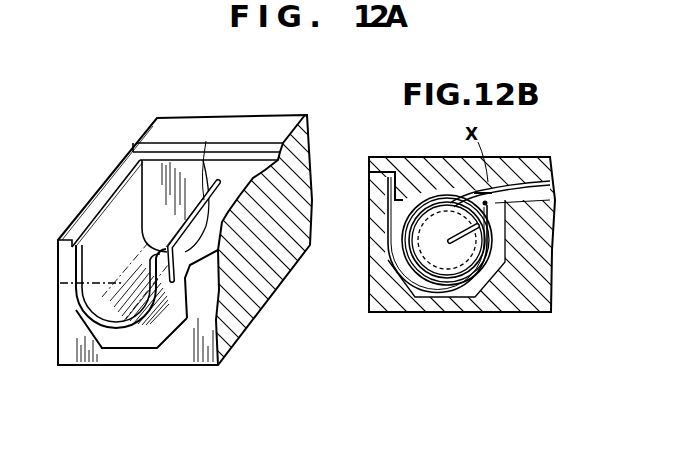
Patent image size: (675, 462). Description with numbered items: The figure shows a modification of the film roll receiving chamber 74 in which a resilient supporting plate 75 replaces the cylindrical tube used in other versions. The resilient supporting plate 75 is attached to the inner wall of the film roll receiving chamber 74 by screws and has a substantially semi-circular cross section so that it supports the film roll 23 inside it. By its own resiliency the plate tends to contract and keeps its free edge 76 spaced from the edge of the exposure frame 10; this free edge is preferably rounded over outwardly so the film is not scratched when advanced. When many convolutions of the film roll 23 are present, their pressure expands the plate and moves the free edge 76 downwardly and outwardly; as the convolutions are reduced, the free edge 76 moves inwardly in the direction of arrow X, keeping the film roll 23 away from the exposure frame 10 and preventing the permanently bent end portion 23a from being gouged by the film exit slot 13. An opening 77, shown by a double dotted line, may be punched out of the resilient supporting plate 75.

In FIG. 12A, the exposure frame 10 is at (277, 260).
In FIG. 12B, the film exit slot 13 is at (497, 183).
In FIG. 12B, the film roll 23 is at (452, 298).
In FIG. 12B, the permanently bent end portion 23a is at (445, 242).
In FIG. 12A, the film roll receiving chamber 74 is at (88, 326).
In FIG. 12B, the film roll receiving chamber 74 is at (403, 216).
In FIG. 12A, the resilient supporting plate 75 is at (129, 332).
In FIG. 12B, the resilient supporting plate 75 is at (387, 216).
In FIG. 12A, the free edge 76 is at (212, 158).
In FIG. 12B, the free edge 76 is at (551, 200).
In FIG. 12A, the opening 77 is at (60, 284).